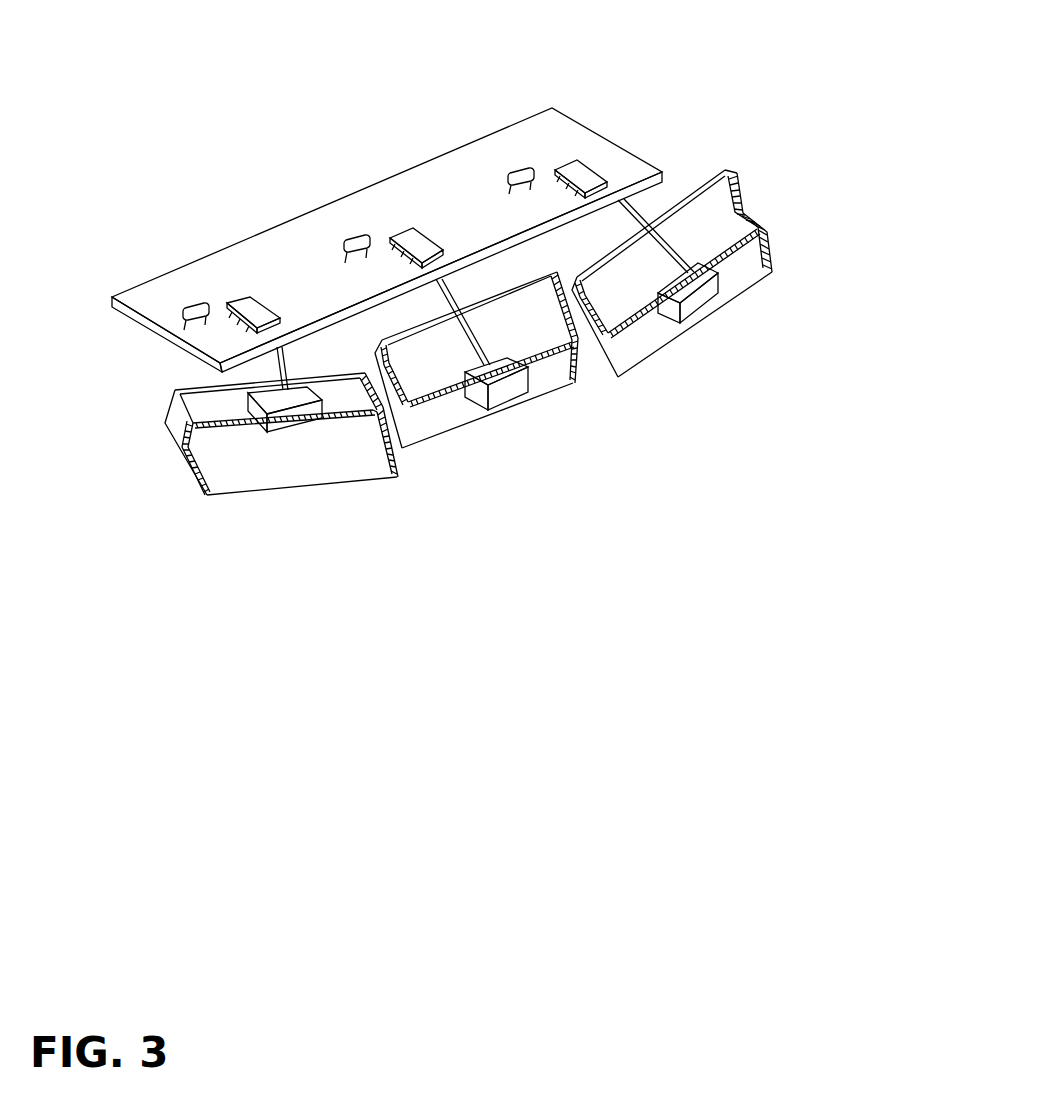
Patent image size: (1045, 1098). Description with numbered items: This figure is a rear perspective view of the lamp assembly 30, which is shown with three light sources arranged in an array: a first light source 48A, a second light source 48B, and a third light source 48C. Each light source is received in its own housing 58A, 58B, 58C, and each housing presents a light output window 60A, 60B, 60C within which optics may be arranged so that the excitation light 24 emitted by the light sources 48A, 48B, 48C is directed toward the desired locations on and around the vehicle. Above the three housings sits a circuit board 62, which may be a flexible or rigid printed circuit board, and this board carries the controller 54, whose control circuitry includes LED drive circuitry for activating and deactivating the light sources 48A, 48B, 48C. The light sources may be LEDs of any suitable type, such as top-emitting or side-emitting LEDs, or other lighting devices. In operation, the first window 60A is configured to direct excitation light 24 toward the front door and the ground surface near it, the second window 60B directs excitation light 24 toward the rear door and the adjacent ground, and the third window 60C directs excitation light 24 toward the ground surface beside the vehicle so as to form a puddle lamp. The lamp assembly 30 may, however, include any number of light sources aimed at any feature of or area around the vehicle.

The lamp assembly 30 is at (812, 144).
The circuit board 62 is at (148, 297).
The controller 54 is at (591, 162).
The first light source 48A is at (693, 280).
The second light source 48B is at (492, 375).
The third light source 48C is at (305, 393).
The housing 58A is at (748, 293).
The housing 58B is at (428, 438).
The housing 58C is at (332, 375).
The first light output window 60A is at (702, 220).
The second light output window 60B is at (566, 384).
The third light output window 60C is at (287, 498).
The excitation light 24 is at (275, 468).